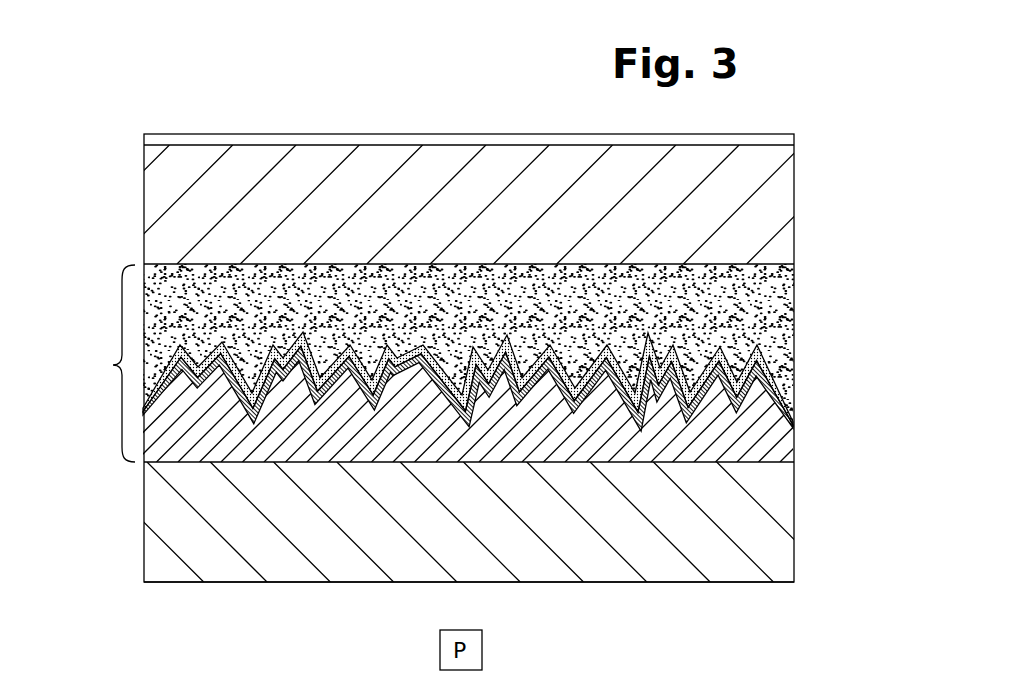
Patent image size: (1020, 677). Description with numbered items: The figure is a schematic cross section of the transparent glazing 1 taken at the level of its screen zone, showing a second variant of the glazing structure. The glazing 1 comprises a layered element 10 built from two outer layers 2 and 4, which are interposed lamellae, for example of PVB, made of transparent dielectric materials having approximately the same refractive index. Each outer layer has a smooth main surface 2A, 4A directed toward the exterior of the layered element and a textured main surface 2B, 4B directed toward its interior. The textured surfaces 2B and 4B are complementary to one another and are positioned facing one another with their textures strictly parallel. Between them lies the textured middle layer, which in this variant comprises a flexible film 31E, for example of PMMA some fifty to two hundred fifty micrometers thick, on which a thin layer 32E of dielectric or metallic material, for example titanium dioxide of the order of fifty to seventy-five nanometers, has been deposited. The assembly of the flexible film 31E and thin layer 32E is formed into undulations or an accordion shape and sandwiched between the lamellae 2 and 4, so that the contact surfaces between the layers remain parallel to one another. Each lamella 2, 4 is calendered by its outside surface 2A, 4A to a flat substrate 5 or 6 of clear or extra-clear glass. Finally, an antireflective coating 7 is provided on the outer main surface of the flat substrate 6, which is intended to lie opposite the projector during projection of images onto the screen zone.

The transparent glazing 1 is at (183, 98).
The layered element 10 is at (81, 363).
The first outer layer 2 is at (793, 412).
The smooth main surface of first outer layer 2A is at (697, 466).
The textured main surface of first outer layer 2B is at (790, 350).
The flexible film 31E is at (793, 433).
The thin layer 32E is at (793, 397).
The second outer layer 4 is at (765, 300).
The smooth main surface of second outer layer 4A is at (757, 264).
The textured main surface of second outer layer 4B is at (693, 464).
The flat substrate 5 is at (775, 558).
The flat substrate 6 is at (777, 186).
The antireflective coating 7 is at (786, 140).